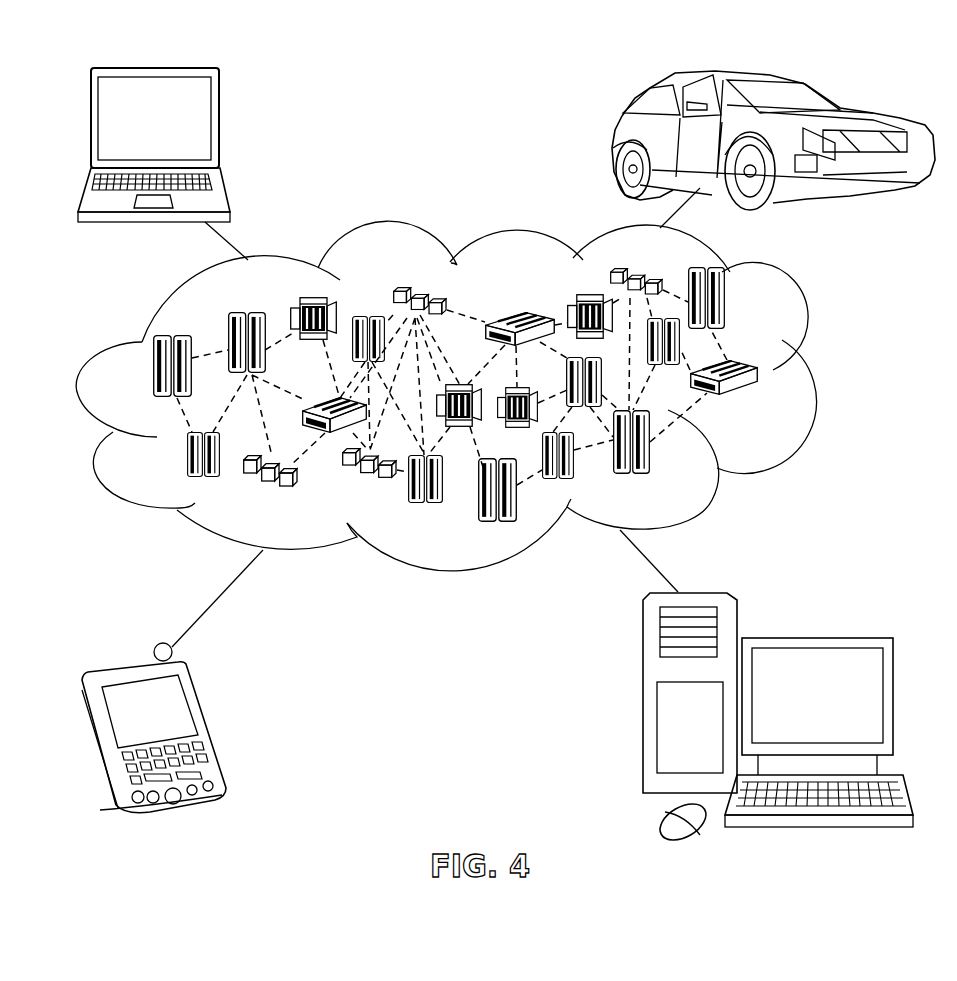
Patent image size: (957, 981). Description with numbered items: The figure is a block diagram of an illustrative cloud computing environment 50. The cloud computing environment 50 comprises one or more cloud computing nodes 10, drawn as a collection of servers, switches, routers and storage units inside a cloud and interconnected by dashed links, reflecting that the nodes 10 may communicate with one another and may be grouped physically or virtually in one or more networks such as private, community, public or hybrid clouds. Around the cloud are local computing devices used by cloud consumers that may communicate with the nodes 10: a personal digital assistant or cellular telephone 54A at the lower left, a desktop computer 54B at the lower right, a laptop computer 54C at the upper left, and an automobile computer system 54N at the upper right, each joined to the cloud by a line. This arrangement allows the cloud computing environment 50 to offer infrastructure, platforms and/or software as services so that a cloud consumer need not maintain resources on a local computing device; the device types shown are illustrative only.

The cloud computing nodes 10 is at (474, 396).
The cloud computing environment 50 is at (815, 373).
The personal digital assistant (PDA) or cellular telephone 54A is at (208, 722).
The desktop computer 54B is at (813, 638).
The laptop computer 54C is at (218, 124).
The automobile computer system 54N is at (616, 150).